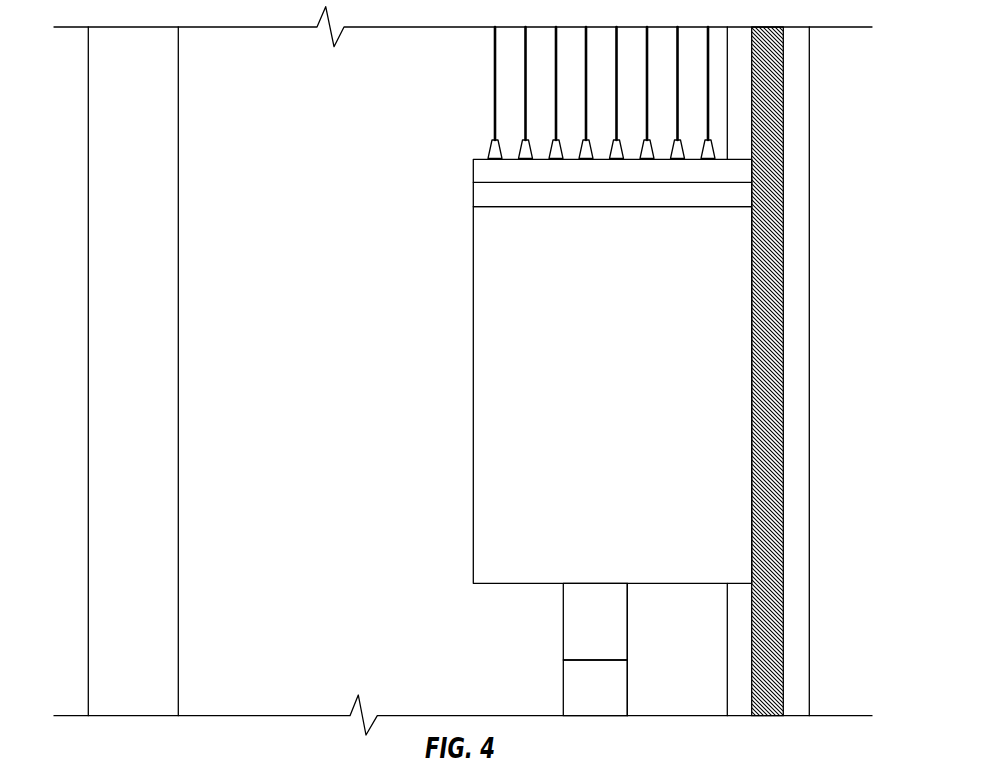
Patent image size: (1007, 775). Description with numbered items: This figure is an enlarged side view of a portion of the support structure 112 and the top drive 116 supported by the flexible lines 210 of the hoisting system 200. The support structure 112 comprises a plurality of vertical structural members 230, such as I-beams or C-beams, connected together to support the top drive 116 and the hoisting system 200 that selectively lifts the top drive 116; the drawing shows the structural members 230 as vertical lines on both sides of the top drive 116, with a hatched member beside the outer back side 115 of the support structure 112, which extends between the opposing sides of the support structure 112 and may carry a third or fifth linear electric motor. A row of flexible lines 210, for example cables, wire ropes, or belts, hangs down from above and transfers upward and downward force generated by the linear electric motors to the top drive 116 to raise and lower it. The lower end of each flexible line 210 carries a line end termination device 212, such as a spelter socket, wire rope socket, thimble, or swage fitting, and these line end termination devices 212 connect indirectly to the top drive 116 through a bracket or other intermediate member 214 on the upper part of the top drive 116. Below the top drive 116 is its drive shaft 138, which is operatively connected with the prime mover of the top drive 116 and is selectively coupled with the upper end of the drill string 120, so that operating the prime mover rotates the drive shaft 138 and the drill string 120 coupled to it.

The support structure 112 is at (179, 190).
The outer back side 115 is at (868, 358).
The top drive 116 is at (473, 293).
The drill string 120 is at (563, 688).
The drive shaft 138 is at (563, 623).
The hoisting system 200 is at (557, 93).
The flexible lines 210 is at (526, 98).
The line end termination device 212 is at (519, 147).
The intermediate member 214 is at (473, 170).
The vertical structural members 230 is at (178, 272).